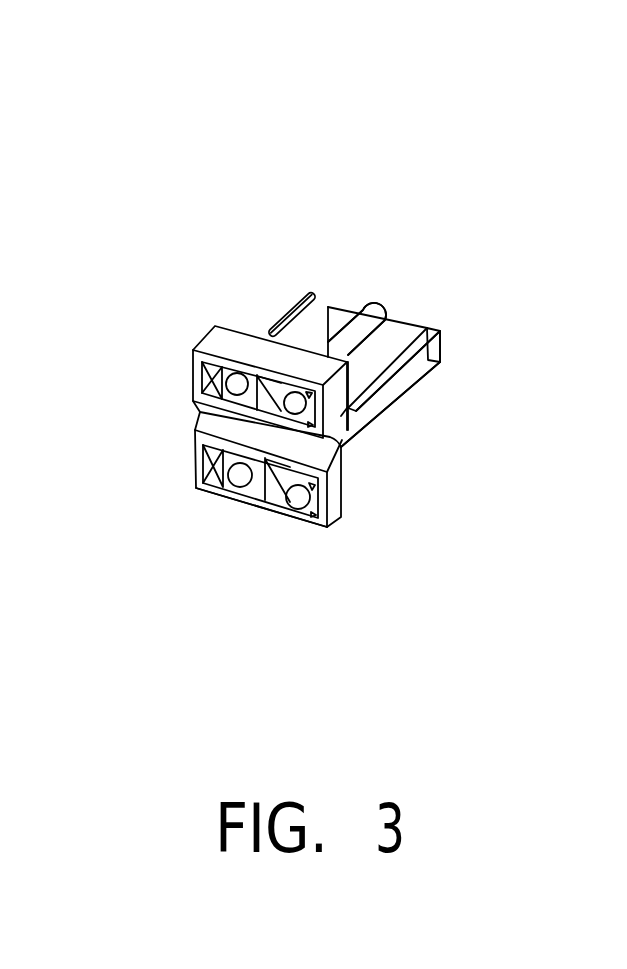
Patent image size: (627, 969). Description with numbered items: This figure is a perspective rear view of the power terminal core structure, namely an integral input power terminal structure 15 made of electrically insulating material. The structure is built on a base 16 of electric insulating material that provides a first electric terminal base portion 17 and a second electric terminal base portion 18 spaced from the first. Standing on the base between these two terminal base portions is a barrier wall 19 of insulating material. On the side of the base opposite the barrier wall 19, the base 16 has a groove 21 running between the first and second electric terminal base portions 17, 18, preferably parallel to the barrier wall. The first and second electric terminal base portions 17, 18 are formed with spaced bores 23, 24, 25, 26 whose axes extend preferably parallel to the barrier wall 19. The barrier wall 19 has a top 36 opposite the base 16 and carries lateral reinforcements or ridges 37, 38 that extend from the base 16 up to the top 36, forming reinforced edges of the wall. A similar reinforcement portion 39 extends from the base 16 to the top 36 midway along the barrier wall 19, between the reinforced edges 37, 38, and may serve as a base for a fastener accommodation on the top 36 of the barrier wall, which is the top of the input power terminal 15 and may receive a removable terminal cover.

The integral input power terminal structure 15 is at (399, 417).
The base 16 is at (256, 529).
The first electric terminal base portion 17 is at (230, 343).
The second electric terminal base portion 18 is at (342, 500).
The barrier wall 19 is at (328, 318).
The groove 21 is at (197, 437).
The bore 23 is at (200, 368).
The bore 24 is at (348, 437).
The bore 25 is at (231, 494).
The bore 26 is at (306, 526).
The top 36 is at (348, 307).
The lateral reinforcement or ridge 37 is at (292, 311).
The lateral reinforcement or ridge 38 is at (420, 368).
The reinforcement portion 39 is at (367, 335).